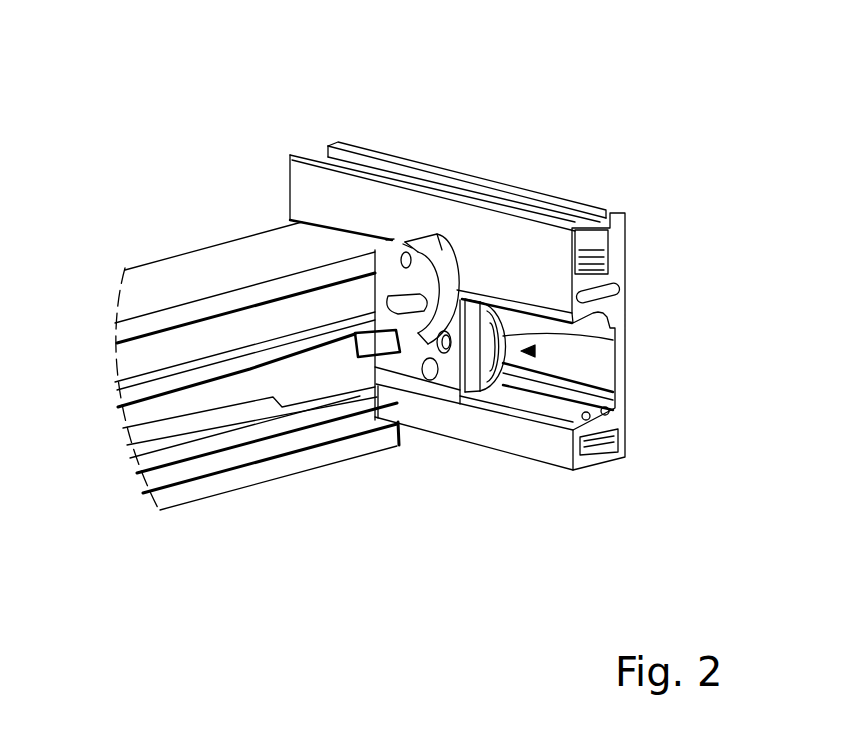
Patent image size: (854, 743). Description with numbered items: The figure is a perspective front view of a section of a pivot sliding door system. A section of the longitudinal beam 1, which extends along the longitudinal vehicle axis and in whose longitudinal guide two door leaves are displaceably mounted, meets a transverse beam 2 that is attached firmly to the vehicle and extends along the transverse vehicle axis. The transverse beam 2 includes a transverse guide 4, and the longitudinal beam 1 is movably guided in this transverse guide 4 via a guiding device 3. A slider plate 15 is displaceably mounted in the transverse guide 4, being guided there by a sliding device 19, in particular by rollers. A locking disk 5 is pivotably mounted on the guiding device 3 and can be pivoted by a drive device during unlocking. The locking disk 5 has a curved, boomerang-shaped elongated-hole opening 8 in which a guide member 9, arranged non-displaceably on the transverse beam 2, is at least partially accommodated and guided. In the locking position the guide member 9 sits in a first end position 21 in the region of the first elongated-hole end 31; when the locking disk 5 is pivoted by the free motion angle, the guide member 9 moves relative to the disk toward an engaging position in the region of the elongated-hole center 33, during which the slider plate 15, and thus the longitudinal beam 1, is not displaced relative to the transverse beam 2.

The longitudinal beam 1 is at (205, 432).
The transverse beam 2 is at (333, 188).
The guiding device 3 is at (530, 351).
The transverse guide 4 is at (583, 357).
The locking disk 5 is at (435, 247).
The elongated-hole opening 8 is at (405, 268).
The guide member 9 is at (396, 242).
The slider plate 15 is at (452, 370).
The sliding device 19 is at (613, 340).
The first end position 21 is at (391, 240).
The first elongated-hole end 31 is at (404, 242).
The elongated-hole center 33 is at (462, 287).